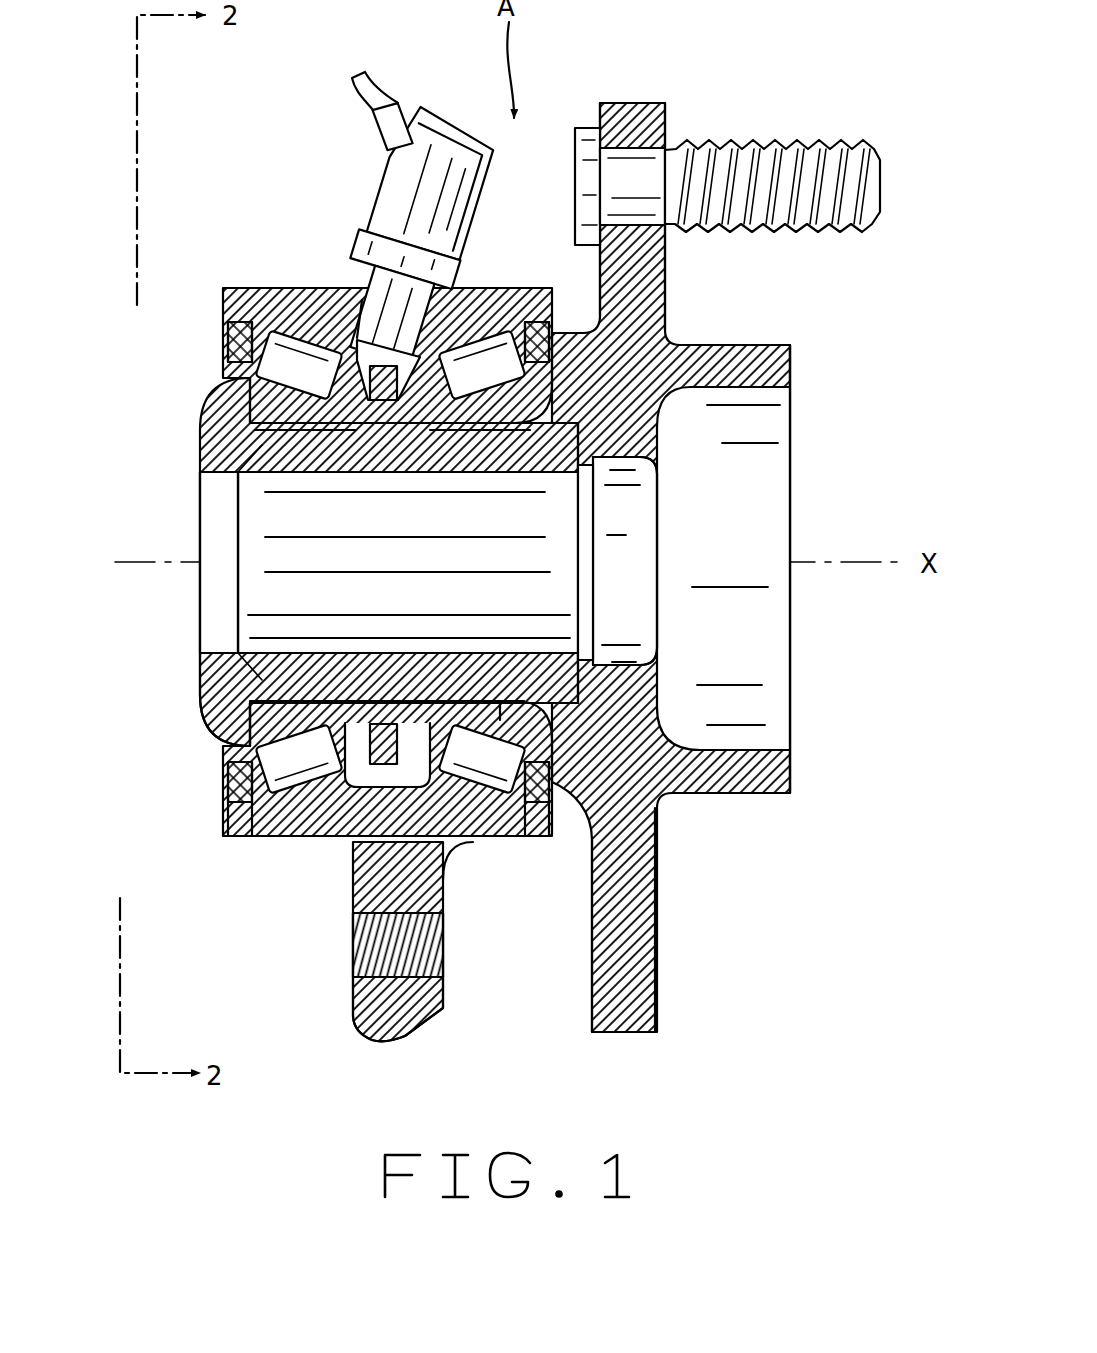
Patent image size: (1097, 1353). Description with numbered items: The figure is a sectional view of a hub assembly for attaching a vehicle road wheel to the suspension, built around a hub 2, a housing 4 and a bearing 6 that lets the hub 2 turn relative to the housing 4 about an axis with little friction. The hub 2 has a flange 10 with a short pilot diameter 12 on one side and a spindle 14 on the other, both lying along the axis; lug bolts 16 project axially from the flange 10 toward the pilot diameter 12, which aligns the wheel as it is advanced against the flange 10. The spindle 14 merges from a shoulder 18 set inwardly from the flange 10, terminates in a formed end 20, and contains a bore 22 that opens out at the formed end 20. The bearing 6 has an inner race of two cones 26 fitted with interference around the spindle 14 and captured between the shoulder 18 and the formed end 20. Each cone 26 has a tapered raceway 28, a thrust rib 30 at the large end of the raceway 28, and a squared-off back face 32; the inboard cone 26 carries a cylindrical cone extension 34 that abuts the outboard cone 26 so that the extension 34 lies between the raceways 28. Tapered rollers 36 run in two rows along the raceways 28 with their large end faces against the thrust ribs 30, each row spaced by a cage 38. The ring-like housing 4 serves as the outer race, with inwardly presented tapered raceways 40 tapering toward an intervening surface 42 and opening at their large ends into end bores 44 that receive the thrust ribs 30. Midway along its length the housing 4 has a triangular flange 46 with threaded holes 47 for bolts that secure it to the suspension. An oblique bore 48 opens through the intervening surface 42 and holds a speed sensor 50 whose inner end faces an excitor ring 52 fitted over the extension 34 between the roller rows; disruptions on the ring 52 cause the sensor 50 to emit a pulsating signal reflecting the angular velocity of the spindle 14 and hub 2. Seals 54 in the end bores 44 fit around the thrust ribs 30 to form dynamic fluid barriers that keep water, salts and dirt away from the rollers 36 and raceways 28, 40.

The hub 2 is at (800, 387).
The housing 4 is at (500, 283).
The bearing 6 is at (232, 447).
The flange 10 is at (655, 925).
The pilot diameter 12 is at (768, 796).
The spindle 14 is at (262, 640).
The lug bolts 16 is at (748, 140).
The shoulder 18 is at (510, 700).
The formed end 20 is at (200, 716).
The bore 22 is at (570, 614).
The cones 26 is at (292, 700).
The tapered raceway 28 is at (310, 440).
The thrust rib 30 is at (272, 352).
The back face 32 is at (222, 392).
The cone extension 34 is at (382, 700).
The tapered rollers 36 is at (285, 840).
The cage 38 is at (246, 840).
The tapered raceways 40 is at (270, 294).
The intervening surface 42 is at (338, 842).
The end bores 44 is at (236, 345).
The triangular flange 46 is at (400, 993).
The threaded holes 47 is at (420, 950).
The bore 48 is at (367, 300).
The speed sensor 50 is at (410, 190).
The excitor ring 52 is at (401, 440).
The seals 54 is at (235, 790).